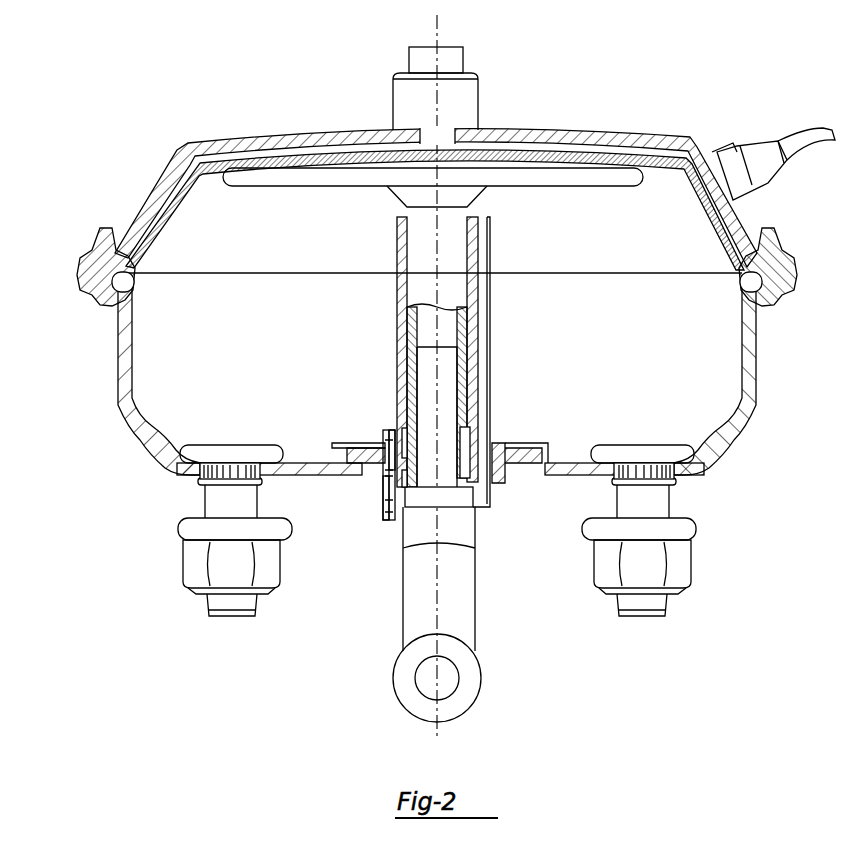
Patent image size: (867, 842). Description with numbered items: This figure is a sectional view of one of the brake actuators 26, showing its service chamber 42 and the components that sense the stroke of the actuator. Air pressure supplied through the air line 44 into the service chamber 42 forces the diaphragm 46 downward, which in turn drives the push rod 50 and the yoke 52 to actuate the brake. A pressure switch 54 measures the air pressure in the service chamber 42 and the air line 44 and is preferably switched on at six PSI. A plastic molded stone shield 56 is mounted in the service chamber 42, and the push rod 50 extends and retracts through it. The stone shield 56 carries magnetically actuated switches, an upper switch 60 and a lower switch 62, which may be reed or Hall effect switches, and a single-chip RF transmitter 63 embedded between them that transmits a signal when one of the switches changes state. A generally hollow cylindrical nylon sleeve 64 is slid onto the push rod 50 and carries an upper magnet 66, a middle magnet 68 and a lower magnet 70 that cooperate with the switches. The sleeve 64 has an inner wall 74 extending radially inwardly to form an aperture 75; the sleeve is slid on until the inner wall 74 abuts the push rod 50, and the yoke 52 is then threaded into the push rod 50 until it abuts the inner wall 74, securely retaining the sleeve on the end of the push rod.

The brake actuator 26 is at (91, 175).
The service chamber 42 is at (157, 167).
The air line 44 is at (800, 131).
The diaphragm 46 is at (581, 147).
The push rod 50 is at (471, 246).
The yoke 52 is at (398, 694).
The pressure switch 54 is at (752, 145).
The stone shield 56 is at (503, 437).
The upper switch 60 is at (387, 432).
The lower switch 62 is at (390, 521).
The RF transmitter 63 is at (383, 468).
The sleeve 64 is at (395, 305).
The upper magnet 66 is at (397, 247).
The middle magnet 68 is at (403, 427).
The lower magnet 70 is at (417, 509).
The inner wall 74 is at (456, 479).
The aperture 75 is at (463, 510).